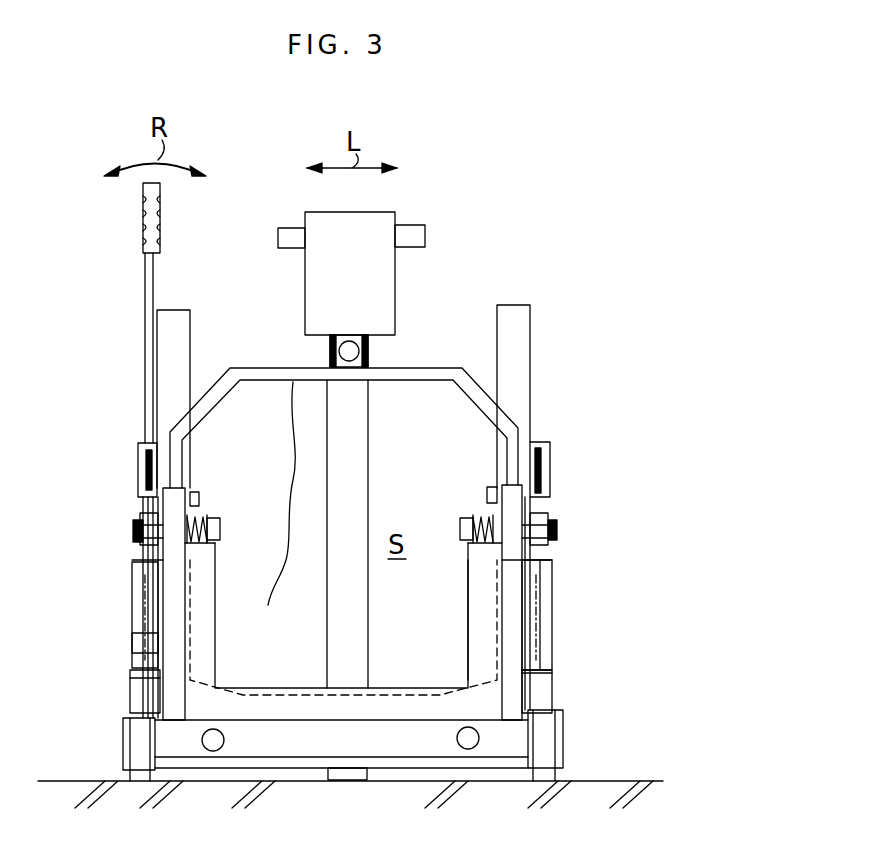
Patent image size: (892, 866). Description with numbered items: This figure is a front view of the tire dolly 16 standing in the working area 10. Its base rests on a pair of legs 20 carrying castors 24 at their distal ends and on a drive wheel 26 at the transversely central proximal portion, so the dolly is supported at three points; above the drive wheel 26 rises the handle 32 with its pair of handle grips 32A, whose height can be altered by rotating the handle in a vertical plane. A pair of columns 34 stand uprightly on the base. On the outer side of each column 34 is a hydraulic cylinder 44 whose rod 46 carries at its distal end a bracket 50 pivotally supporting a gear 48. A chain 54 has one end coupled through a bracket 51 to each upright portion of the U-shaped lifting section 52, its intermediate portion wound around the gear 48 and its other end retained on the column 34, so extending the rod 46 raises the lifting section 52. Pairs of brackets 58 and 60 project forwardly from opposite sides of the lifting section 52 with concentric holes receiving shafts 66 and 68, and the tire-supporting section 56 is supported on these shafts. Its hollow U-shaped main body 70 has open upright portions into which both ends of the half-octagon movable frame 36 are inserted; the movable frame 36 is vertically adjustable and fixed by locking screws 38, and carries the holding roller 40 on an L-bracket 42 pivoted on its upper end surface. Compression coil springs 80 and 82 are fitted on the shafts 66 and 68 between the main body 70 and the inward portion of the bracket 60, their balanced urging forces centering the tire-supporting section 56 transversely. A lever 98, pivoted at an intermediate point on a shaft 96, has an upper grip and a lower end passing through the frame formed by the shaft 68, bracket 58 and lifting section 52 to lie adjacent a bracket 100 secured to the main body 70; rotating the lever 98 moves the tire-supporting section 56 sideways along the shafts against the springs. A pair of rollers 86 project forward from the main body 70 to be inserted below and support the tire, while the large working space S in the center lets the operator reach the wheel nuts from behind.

The working area 10 is at (605, 781).
The tire dolly 16 is at (386, 198).
The legs 20 is at (123, 738).
The castors 24 is at (140, 784).
The drive wheel 26 is at (346, 783).
The handle 32 is at (385, 288).
The handle grips 32A is at (281, 236).
The columns 34 is at (157, 384).
The movable frame 36 is at (341, 615).
The locking screws 38 is at (200, 498).
The holding roller 40 is at (330, 348).
The L-bracket 42 is at (368, 348).
The hydraulic cylinder 44 is at (132, 598).
The rod 46 is at (133, 560).
The gear 48 is at (143, 470).
The bracket 50 is at (138, 460).
The bracket 51 is at (140, 690).
The lifting section 52 is at (203, 565).
The chain 54 is at (132, 620).
The tire-supporting section 56 is at (278, 583).
The brackets 58 is at (133, 525).
The brackets 60 is at (210, 538).
The shaft 66 is at (480, 620).
The shaft 68 is at (140, 550).
The main body 70 is at (207, 570).
The compression coil spring 80 is at (462, 528).
The compression coil spring 82 is at (220, 525).
The rollers 86 is at (213, 751).
The shaft 96 is at (165, 472).
The lever 98 is at (160, 285).
The bracket 100 is at (132, 645).